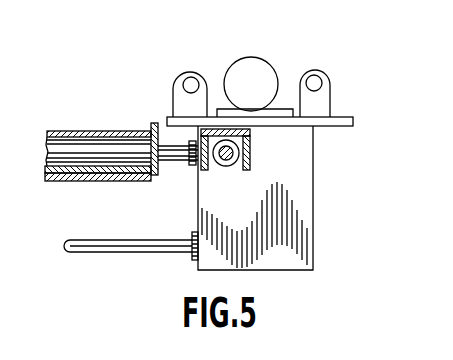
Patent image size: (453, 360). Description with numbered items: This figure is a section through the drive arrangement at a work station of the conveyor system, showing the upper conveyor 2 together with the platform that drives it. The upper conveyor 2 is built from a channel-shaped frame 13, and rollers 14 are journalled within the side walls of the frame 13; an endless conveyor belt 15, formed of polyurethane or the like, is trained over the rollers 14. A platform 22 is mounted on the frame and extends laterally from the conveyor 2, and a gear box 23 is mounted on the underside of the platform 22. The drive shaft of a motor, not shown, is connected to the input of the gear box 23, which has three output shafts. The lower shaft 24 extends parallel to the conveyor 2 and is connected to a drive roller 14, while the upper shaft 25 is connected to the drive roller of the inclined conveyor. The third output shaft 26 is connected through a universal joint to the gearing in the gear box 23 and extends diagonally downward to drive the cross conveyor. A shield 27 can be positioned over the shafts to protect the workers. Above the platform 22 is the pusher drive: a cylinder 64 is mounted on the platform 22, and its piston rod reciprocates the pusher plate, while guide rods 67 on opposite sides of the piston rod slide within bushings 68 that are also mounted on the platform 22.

The upper conveyor 2 is at (97, 138).
The channel-shaped frame 13 is at (87, 176).
The rollers 14 is at (58, 147).
The endless conveyor belt 15 is at (75, 131).
The platform 22 is at (353, 117).
The gear box 23 is at (310, 218).
The lower output shaft 24 is at (125, 240).
The upper output shaft 25 is at (181, 155).
The third output shaft 26 is at (230, 163).
The shield 27 is at (250, 153).
The cylinder 64 is at (261, 70).
The guide rods 67 is at (191, 78).
The bushings 68 is at (174, 88).